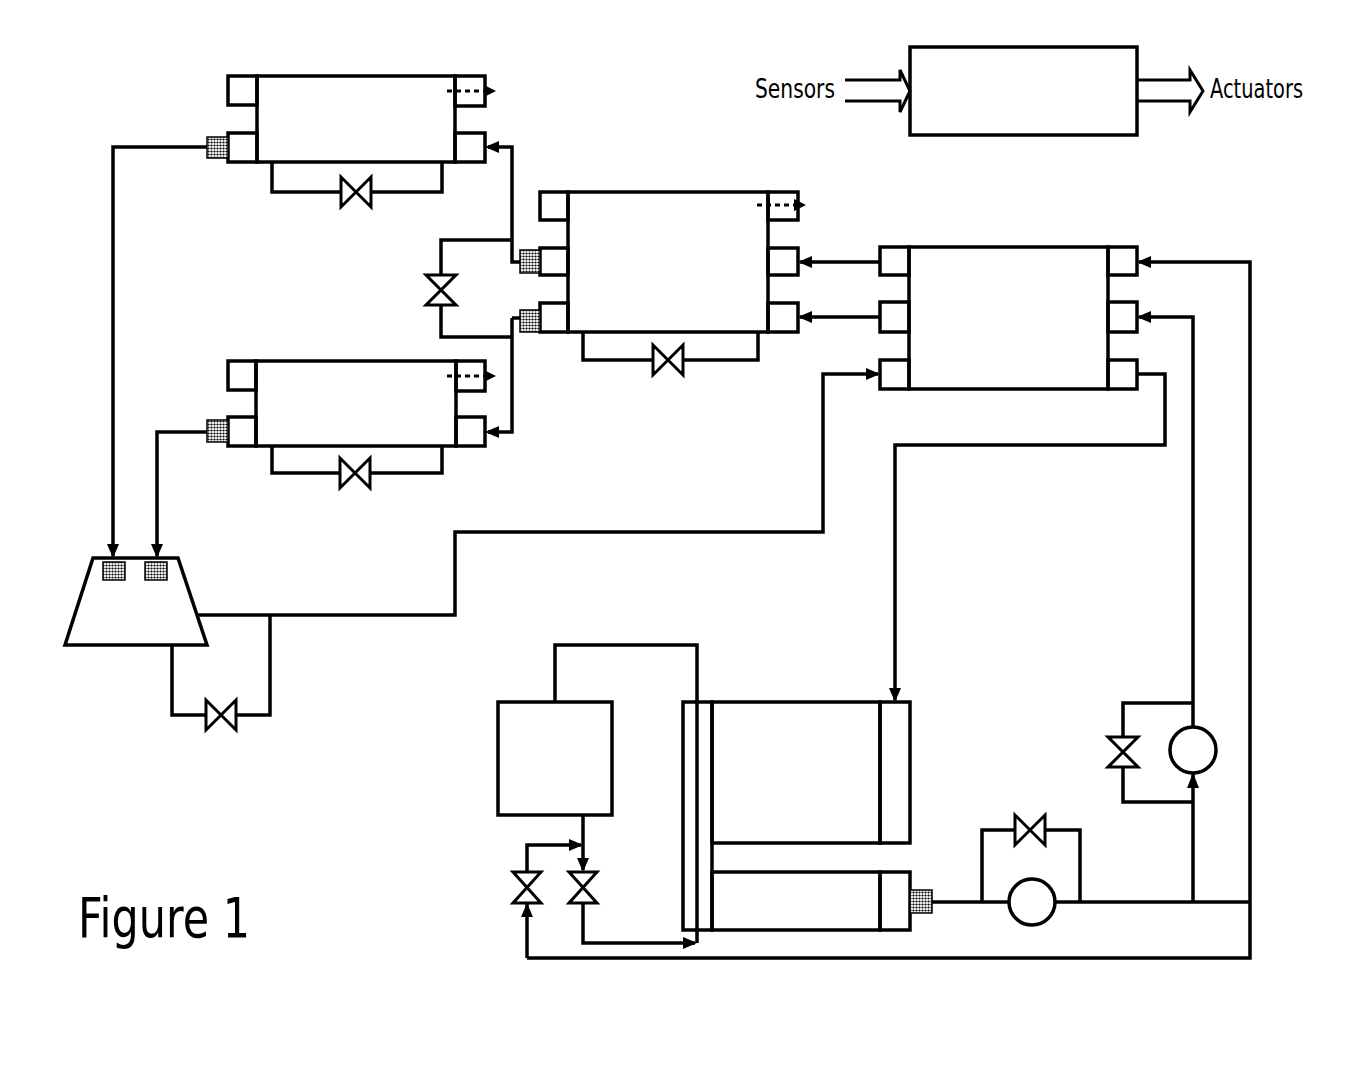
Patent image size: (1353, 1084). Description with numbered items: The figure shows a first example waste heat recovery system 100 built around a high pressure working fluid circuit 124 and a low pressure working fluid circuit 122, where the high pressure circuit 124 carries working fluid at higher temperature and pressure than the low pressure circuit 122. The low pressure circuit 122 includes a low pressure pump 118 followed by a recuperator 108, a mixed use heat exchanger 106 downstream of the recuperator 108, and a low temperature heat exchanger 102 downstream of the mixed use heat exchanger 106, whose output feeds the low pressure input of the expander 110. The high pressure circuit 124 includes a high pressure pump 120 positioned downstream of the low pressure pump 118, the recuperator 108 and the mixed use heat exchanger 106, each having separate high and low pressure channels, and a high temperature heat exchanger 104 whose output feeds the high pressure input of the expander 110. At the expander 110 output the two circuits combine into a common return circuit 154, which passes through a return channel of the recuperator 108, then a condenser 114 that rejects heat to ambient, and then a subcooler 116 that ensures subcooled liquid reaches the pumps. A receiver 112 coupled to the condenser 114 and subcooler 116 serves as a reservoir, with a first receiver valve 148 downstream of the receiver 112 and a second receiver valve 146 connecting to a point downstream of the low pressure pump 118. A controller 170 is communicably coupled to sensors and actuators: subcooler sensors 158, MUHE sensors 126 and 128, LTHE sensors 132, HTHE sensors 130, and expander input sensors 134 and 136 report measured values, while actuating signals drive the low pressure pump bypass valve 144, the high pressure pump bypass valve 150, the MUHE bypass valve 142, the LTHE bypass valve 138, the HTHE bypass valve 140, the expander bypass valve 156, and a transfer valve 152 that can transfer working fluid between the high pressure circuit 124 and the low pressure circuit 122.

The WHR system 100 is at (1232, 190).
The low temperature heat exchanger 102 is at (432, 151).
The high temperature heat exchanger 104 is at (432, 436).
The mixed use heat exchanger 106 is at (688, 307).
The recuperator 108 is at (1030, 348).
The expander 110 is at (153, 641).
The receiver 112 is at (573, 789).
The condenser 114 is at (815, 804).
The subcooler 116 is at (870, 917).
The low pressure pump 118 is at (1045, 921).
The high pressure pump 120 is at (1213, 768).
The low pressure working fluid circuit 122 is at (1252, 492).
The high pressure working fluid circuit 124 is at (1193, 545).
The MUHE sensor 126 is at (528, 335).
The MUHE sensor 128 is at (528, 249).
The HTHE sensor 130 is at (210, 422).
The LTHE sensor 132 is at (207, 140).
The expander input sensor 134 is at (168, 567).
The expander input sensor 136 is at (103, 567).
The LTHE bypass valve 138 is at (348, 214).
The HTHE bypass valve 140 is at (350, 494).
The MUHE bypass valve 142 is at (666, 388).
The low pressure pump bypass valve 144 is at (1022, 802).
The second receiver valve 146 is at (500, 892).
The first receiver valve 148 is at (606, 892).
The high pressure pump bypass valve 150 is at (1097, 754).
The transfer valve 152 is at (414, 292).
The common return circuit 154 is at (545, 535).
The expander bypass valve 156 is at (214, 740).
The subcooler sensor 158 is at (919, 888).
The controller 170 is at (1042, 121).